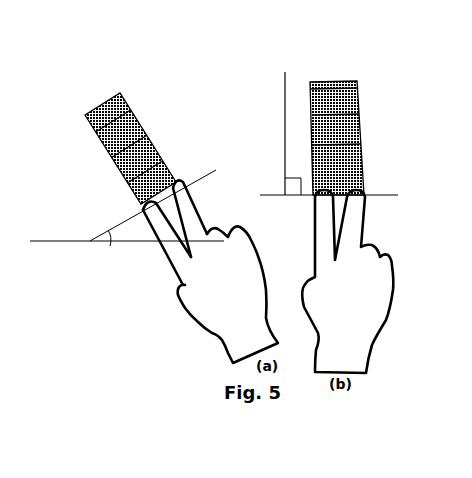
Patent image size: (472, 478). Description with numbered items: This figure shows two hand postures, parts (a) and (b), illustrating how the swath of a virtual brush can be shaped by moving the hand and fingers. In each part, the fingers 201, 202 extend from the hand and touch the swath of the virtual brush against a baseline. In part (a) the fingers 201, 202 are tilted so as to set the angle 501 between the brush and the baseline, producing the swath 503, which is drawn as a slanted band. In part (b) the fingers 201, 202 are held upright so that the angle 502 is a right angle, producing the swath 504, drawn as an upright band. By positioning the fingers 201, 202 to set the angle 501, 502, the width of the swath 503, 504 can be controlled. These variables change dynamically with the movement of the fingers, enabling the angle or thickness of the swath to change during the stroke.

The finger 201 is at (165, 243).
The finger 202 is at (203, 229).
The angle 501 is at (105, 235).
The angle 502 is at (292, 193).
The swath 503 is at (103, 98).
The swath 504 is at (332, 82).